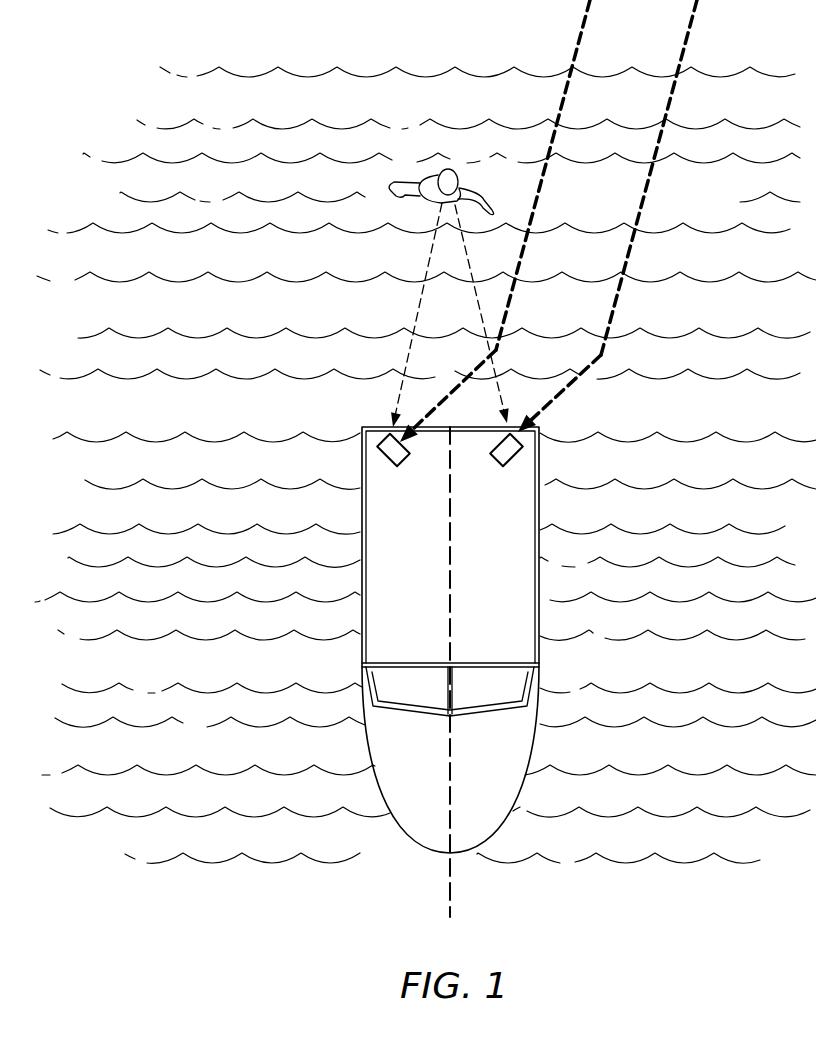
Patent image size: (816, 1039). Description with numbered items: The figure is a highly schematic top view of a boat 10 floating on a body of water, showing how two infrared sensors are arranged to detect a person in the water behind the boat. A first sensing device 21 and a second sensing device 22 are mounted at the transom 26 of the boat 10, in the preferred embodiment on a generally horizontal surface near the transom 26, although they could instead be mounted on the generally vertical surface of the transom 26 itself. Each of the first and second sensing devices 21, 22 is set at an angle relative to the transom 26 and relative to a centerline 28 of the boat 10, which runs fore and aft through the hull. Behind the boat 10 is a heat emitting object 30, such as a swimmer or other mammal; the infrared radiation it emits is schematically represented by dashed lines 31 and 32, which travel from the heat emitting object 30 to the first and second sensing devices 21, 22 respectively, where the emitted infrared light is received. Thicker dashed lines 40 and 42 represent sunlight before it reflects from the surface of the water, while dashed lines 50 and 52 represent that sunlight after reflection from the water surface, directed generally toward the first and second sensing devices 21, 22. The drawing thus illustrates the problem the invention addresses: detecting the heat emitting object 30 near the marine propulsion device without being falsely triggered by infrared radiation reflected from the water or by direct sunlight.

The boat 10 is at (420, 830).
The first sensing device 21 is at (390, 467).
The second sensing device 22 is at (488, 465).
The transom 26 is at (362, 427).
The centerline 28 is at (452, 610).
The heat emitting object 30 is at (440, 175).
The dashed line 31 is at (431, 262).
The dashed line 32 is at (469, 258).
The dashed line 40 is at (540, 197).
The dashed line 42 is at (645, 197).
The dashed line 50 is at (436, 406).
The dashed line 52 is at (566, 389).